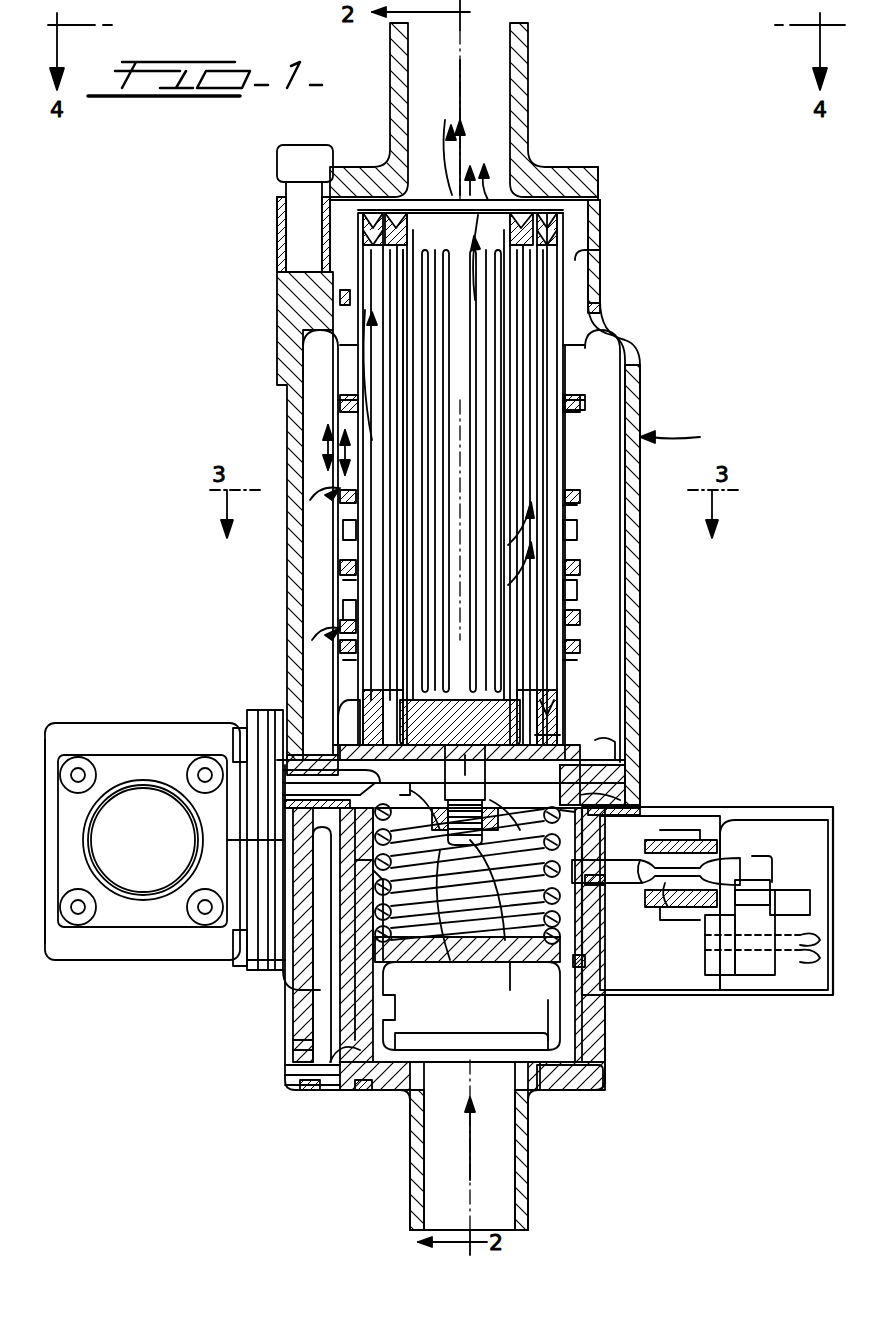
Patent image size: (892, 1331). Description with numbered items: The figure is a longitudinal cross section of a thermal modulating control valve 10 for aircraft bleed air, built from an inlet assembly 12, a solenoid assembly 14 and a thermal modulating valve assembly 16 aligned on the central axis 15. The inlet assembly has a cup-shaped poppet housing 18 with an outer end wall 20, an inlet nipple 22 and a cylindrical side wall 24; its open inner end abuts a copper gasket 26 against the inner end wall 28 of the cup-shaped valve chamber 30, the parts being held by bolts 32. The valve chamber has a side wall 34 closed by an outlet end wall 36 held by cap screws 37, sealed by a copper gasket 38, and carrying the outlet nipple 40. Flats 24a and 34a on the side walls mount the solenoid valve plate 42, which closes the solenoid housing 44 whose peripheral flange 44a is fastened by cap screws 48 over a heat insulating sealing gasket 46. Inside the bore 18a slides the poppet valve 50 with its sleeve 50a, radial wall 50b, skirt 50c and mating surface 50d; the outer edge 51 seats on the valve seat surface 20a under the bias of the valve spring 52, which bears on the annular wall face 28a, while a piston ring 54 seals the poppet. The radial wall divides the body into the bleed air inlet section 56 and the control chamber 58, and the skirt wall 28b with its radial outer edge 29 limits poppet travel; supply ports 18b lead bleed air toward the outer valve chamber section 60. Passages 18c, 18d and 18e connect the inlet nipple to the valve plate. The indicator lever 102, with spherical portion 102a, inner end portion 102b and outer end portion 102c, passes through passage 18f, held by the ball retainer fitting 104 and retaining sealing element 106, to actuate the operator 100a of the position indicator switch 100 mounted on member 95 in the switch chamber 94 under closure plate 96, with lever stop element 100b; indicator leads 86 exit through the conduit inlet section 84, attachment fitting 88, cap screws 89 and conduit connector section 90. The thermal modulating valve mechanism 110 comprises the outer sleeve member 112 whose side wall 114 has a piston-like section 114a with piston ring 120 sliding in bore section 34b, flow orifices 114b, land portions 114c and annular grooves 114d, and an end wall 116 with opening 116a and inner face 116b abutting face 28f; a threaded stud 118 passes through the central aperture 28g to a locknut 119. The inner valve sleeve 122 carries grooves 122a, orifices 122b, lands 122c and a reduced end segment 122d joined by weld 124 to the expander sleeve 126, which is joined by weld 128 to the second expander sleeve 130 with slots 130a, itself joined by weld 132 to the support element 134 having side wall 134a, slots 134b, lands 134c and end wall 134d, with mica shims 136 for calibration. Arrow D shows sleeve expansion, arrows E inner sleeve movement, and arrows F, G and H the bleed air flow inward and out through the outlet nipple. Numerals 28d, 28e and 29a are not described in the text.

The thermal modulating control valve 10 is at (182, 1095).
The inlet assembly 12 is at (612, 1038).
The solenoid assembly 14 is at (116, 720).
The central longitudinal axis 15 is at (467, 609).
The thermal modulating valve assembly 16 is at (683, 436).
The poppet housing 18 is at (300, 1012).
The cylindrical bore 18a is at (302, 1095).
The supply ports 18b is at (440, 1052).
The radial passage 18c is at (292, 1086).
The longitudinally extending passage 18d is at (300, 1040).
The short radial passage 18e is at (325, 850).
The passage 18f is at (586, 910).
The annular outer end wall 20 is at (545, 1088).
The valve seat surface 20a is at (378, 1090).
The inlet nipple 22 is at (530, 1190).
The outer side wall 24 is at (614, 1012).
The flat 24a is at (283, 958).
The gasket 26 is at (642, 805).
The inner end wall 28 is at (603, 767).
The annular wall face 28a is at (530, 832).
The skirt wall 28b is at (405, 830).
The plate step 28d is at (380, 790).
The plate edge 28e is at (330, 768).
The opposite face 28f is at (610, 755).
The central aperture 28g is at (487, 855).
The radial outer edge 29 is at (350, 872).
The gasket 29a is at (586, 816).
The valve chamber 30 is at (630, 603).
The bolts 32 is at (572, 1092).
The side wall 34 is at (300, 400).
The flat 34a is at (258, 722).
The cylindrical bore section 34b is at (598, 238).
The outlet end wall 36 is at (565, 195).
The cap screws 37 is at (295, 162).
The copper gasket 38 is at (600, 200).
The outlet nipple 40 is at (530, 58).
The solenoid valve plate 42 is at (250, 840).
The solenoid housing 44 is at (88, 835).
The peripheral flange 44a is at (250, 865).
The heat insulating sealing gasket 46 is at (290, 985).
The cap screws 48 is at (238, 745).
The poppet valve 50 is at (388, 1053).
The cylindrical sleeve 50a is at (546, 1018).
The radial wall portion 50b is at (514, 963).
The cylindrical skirt 50c is at (355, 900).
The mating surface 50d is at (588, 962).
The outer edge 51 is at (575, 1082).
The valve spring 52 is at (560, 806).
The piston ring 54 is at (607, 997).
The bleed air inlet section 56 is at (398, 1033).
The control chamber 58 is at (505, 875).
The outer valve chamber section 60 is at (628, 462).
The conduit inlet section 84 is at (65, 735).
The indicator leads 86 is at (808, 958).
The attachment fitting 88 is at (62, 795).
The cap screws 89 is at (78, 775).
The conduit connector section 90 is at (82, 850).
The switch chamber 94 is at (736, 822).
The member 95 is at (722, 968).
The closure plate 96 is at (832, 820).
The position indicator switch 100 is at (755, 948).
The operator 100a is at (790, 892).
The lever stop element 100b is at (758, 858).
The poppet valve position indicator lever 102 is at (705, 858).
The spherical portion 102a is at (666, 905).
The inner end portion 102b is at (615, 882).
The outer end portion 102c is at (740, 890).
The ball retainer fitting 104 is at (680, 840).
The retaining sealing element 106 is at (648, 852).
The thermal modulating valve mechanism 110 is at (600, 375).
The outer sleeve member 112 is at (578, 545).
The cylindrical side wall 114 is at (590, 685).
The piston-like section 114a is at (598, 285).
The flow orifices 114b is at (348, 545).
The land portion 114c is at (355, 345).
The annular groove 114d is at (572, 522).
The radial annular end wall 116 is at (365, 712).
The opening 116a is at (556, 722).
The inner face 116b is at (560, 738).
The threaded stud 118 is at (470, 776).
The locknut 119 is at (447, 862).
The piston ring 120 is at (600, 308).
The inner valve sleeve 122 is at (568, 402).
The circumferential grooves 122a is at (348, 575).
The orifices 122b is at (345, 498).
The land portions 122c is at (345, 403).
The reduced diameter end segment 122d is at (362, 225).
The annular weld 124 is at (372, 210).
The expander sleeve 126 is at (385, 262).
The annular weld 128 is at (378, 735).
The second inner expander sleeve 130 is at (395, 288).
The air flow slots 130a is at (395, 248).
The annular weld 132 is at (395, 212).
The support element 134 is at (415, 212).
The side wall 134a is at (478, 215).
The air flow slots 134b is at (438, 378).
The lands 134c is at (470, 382).
The radial end wall 134d is at (425, 731).
The shims 136 is at (500, 760).
The arrow D is at (340, 455).
The arrows E is at (370, 315).
The arrows F is at (315, 495).
The arrows G is at (505, 560).
The arrows H is at (447, 115).